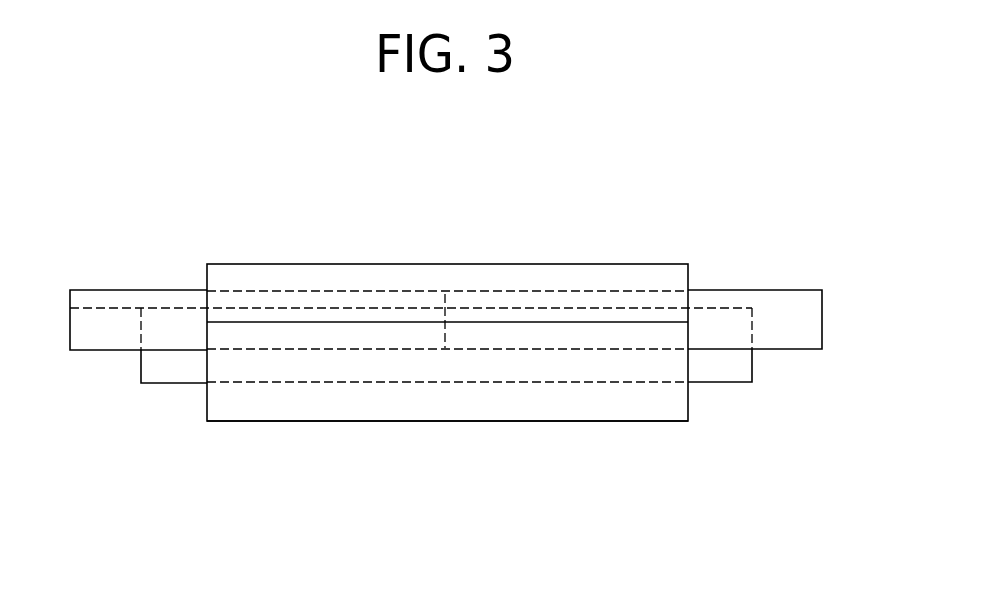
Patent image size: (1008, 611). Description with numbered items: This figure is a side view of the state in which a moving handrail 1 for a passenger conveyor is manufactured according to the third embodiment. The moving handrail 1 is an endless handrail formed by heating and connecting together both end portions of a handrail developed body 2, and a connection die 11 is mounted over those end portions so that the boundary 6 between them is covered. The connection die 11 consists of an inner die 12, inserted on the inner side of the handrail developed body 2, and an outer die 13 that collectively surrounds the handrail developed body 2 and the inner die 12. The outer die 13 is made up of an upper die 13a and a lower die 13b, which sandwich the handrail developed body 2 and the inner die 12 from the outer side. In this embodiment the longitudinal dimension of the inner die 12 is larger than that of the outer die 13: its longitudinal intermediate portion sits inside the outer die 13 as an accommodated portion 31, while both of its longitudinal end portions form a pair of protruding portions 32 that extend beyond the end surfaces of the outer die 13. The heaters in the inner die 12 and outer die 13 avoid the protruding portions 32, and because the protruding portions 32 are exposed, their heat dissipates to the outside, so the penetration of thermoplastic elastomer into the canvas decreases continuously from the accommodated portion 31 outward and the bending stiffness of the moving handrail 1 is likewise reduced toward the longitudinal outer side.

The moving handrail 1 is at (785, 270).
The handrail developed body 2 is at (95, 351).
The boundary 6 is at (445, 294).
The connection die 11 is at (635, 262).
The inner die 12 is at (377, 382).
The outer die 13 is at (550, 421).
The upper die 13a is at (563, 277).
The lower die 13b is at (601, 408).
The accommodated portion 31 is at (450, 367).
The protruding portions 32 is at (175, 372).